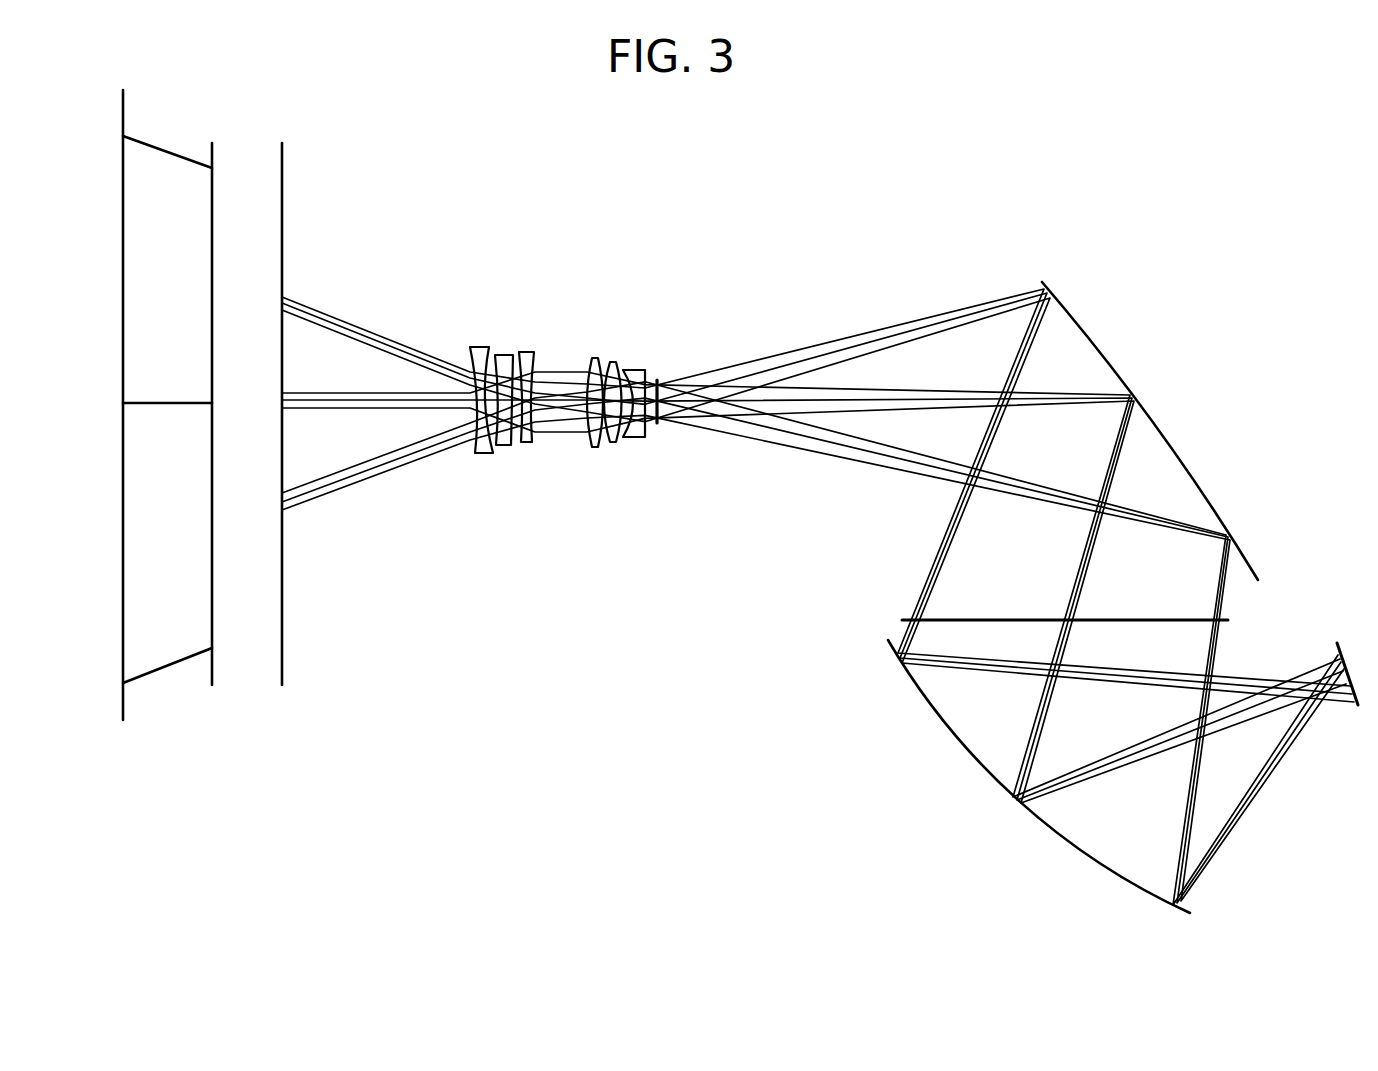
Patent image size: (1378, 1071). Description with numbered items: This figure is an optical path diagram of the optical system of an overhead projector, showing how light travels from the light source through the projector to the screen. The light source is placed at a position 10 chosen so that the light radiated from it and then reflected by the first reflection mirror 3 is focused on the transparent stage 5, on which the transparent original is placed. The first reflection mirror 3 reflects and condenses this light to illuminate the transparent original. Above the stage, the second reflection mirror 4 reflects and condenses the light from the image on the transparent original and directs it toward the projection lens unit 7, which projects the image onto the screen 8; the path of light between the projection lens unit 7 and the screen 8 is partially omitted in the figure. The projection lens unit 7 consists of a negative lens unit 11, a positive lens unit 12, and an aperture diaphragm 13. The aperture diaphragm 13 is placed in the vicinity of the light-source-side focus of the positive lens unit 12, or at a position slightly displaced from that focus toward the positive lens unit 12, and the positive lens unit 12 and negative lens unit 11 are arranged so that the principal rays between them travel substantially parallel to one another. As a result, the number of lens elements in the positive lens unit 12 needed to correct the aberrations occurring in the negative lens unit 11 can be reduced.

The first reflection mirror 3 is at (1047, 833).
The second reflection mirror 4 is at (1167, 437).
The transparent stage 5 is at (993, 620).
The projection lens unit 7 is at (579, 486).
The screen 8 is at (123, 708).
The position 10 is at (1323, 708).
The negative lens unit 11 is at (503, 466).
The positive lens unit 12 is at (613, 461).
The aperture diaphragm 13 is at (657, 429).